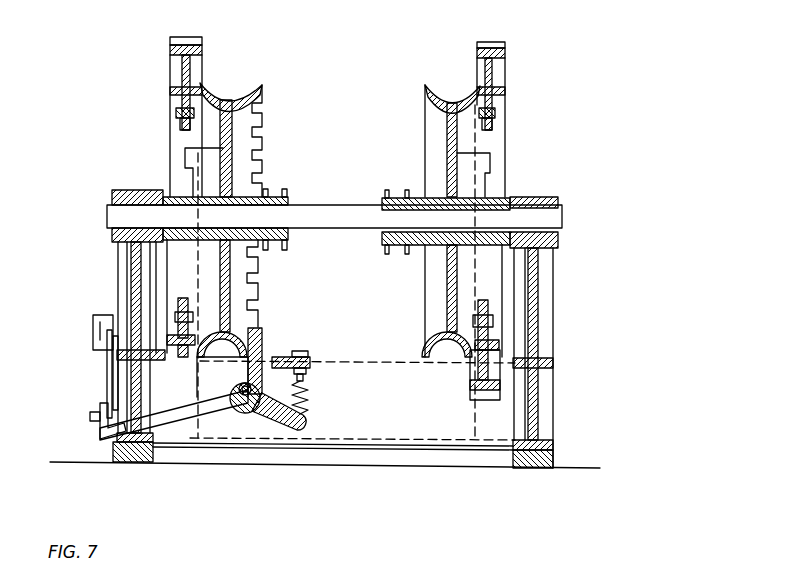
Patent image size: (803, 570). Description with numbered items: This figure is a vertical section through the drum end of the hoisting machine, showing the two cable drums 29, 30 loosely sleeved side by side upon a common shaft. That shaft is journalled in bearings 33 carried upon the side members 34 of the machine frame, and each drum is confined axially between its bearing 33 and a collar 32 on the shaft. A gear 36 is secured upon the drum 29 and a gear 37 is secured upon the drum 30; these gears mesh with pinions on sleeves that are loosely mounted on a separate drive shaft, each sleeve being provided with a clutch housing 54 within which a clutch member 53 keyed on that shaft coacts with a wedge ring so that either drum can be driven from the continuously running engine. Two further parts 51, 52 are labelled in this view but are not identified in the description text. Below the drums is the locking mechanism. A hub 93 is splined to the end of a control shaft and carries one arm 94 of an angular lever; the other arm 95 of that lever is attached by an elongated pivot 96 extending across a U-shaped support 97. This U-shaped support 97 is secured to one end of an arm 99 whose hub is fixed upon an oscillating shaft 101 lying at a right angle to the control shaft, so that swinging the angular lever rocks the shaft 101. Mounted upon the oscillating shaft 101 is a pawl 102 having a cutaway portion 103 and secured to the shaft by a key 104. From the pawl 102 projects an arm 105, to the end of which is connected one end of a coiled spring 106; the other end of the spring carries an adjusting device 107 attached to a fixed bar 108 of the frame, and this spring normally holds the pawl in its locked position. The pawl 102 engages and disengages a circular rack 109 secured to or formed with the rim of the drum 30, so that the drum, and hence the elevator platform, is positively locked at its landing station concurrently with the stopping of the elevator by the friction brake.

The drum 29 is at (448, 88).
The drum 30 is at (232, 95).
The collar 32 is at (399, 196).
The bearing 33 is at (543, 197).
The side member 34 is at (548, 250).
The gear 36 is at (503, 43).
The gear 37 is at (178, 38).
The shaft 51 is at (345, 218).
The hub 52 is at (272, 190).
The clutch member 53 is at (128, 190).
The clutch housing 54 is at (116, 242).
The hub 93 is at (98, 322).
The arm 94 is at (106, 373).
The arm 95 is at (112, 400).
The elongated pivot 96 is at (92, 417).
The U-shaped support 97 is at (102, 435).
The arm 99 is at (200, 402).
The oscillating shaft 101 is at (243, 412).
The pawl 102 is at (262, 345).
The cutaway portion 103 is at (241, 389).
The key 104 is at (243, 383).
The arm 105 is at (299, 432).
The coiled spring 106 is at (306, 396).
The adjusting device 107 is at (310, 375).
The fixed bar 108 is at (278, 357).
The circular rack 109 is at (262, 278).